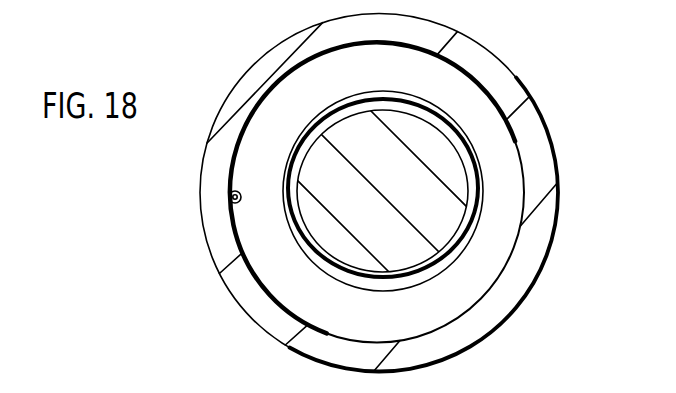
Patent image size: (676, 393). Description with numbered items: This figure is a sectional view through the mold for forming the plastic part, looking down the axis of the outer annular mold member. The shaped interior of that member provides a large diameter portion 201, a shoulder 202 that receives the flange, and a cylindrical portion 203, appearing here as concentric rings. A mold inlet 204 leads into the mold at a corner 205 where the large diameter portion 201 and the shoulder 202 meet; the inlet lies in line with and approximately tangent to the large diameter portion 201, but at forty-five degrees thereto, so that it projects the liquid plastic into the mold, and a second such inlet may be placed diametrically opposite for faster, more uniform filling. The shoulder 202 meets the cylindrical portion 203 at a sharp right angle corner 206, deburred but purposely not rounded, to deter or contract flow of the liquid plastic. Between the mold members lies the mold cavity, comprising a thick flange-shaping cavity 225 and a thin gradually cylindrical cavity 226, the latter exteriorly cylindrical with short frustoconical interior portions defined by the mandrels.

The large diameter portion 201 is at (514, 240).
The shoulder 202 is at (354, 318).
The cylindrical portion 203 is at (428, 281).
The mold inlet 204 is at (276, 181).
The corner 205 is at (229, 196).
The sharp right angle corner 206 is at (378, 95).
The thick flange-shaping cavity 225 is at (470, 97).
The thin gradually cylindrical cavity 226 is at (447, 128).